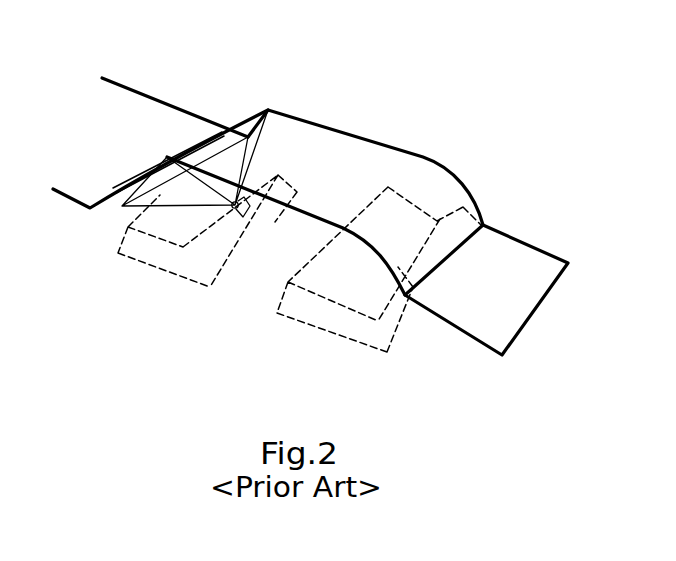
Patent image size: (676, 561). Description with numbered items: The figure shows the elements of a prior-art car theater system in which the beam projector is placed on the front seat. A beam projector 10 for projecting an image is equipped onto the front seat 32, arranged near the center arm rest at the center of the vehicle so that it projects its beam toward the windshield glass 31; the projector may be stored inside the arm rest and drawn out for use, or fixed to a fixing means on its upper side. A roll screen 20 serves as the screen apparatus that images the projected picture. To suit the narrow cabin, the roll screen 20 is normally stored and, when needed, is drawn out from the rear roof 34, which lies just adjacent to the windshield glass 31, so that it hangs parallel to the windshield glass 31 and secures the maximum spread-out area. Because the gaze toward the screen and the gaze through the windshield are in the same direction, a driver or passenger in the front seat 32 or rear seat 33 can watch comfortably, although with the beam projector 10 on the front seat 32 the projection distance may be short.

The beam projector 10 is at (243, 217).
The roll screen 20 is at (126, 197).
The windshield glass 31 is at (122, 177).
The front seat 32 is at (177, 262).
The rear seat 33 is at (360, 325).
The rear roof 34 is at (313, 140).